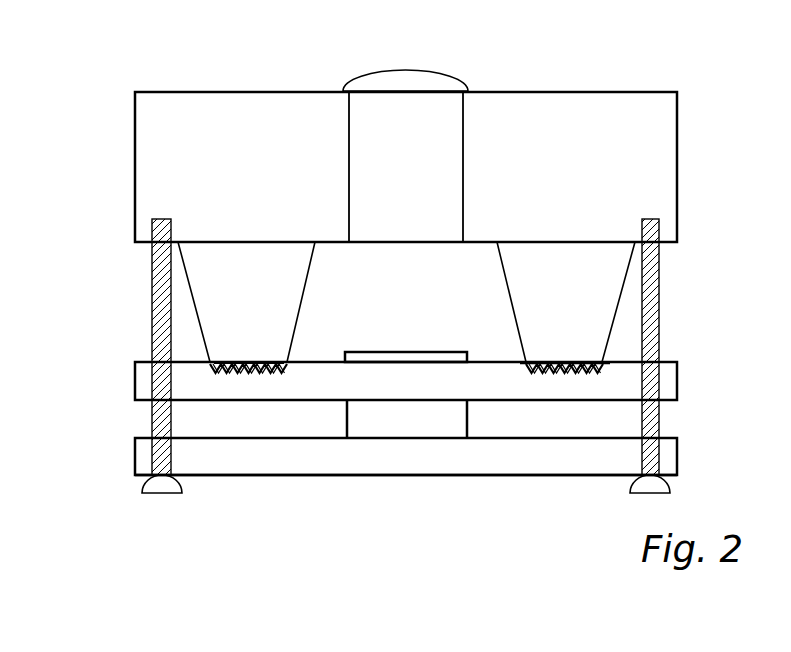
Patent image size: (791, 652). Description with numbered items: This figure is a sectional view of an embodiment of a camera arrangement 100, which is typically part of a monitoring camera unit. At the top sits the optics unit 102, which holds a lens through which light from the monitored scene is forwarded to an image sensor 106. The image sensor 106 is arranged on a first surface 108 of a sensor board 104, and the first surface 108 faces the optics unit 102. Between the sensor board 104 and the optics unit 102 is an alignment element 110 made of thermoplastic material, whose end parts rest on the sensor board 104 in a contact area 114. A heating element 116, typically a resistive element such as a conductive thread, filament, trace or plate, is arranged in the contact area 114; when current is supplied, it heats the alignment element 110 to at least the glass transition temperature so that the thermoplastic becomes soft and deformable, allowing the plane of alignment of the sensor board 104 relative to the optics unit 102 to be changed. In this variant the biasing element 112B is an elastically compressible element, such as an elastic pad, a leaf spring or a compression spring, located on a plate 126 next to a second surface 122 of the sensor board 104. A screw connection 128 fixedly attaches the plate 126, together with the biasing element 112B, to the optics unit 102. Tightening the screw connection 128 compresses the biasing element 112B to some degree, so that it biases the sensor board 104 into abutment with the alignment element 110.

The camera arrangement 100 is at (102, 100).
The optics unit 102 is at (572, 92).
The sensor board 104 is at (507, 361).
The image sensor 106 is at (412, 351).
The first surface 108 is at (310, 361).
The alignment element 110 is at (226, 297).
The biasing element 112B is at (397, 422).
The contact area 114 is at (258, 376).
The heating element 116 is at (226, 376).
The second surface 122 is at (312, 401).
The plate 126 is at (443, 477).
The screw connection 128 is at (152, 298).